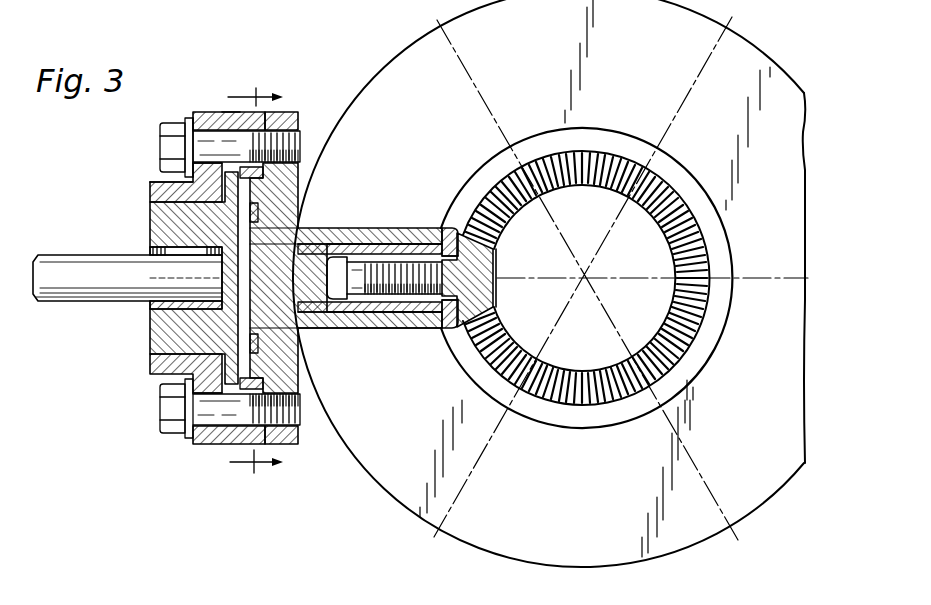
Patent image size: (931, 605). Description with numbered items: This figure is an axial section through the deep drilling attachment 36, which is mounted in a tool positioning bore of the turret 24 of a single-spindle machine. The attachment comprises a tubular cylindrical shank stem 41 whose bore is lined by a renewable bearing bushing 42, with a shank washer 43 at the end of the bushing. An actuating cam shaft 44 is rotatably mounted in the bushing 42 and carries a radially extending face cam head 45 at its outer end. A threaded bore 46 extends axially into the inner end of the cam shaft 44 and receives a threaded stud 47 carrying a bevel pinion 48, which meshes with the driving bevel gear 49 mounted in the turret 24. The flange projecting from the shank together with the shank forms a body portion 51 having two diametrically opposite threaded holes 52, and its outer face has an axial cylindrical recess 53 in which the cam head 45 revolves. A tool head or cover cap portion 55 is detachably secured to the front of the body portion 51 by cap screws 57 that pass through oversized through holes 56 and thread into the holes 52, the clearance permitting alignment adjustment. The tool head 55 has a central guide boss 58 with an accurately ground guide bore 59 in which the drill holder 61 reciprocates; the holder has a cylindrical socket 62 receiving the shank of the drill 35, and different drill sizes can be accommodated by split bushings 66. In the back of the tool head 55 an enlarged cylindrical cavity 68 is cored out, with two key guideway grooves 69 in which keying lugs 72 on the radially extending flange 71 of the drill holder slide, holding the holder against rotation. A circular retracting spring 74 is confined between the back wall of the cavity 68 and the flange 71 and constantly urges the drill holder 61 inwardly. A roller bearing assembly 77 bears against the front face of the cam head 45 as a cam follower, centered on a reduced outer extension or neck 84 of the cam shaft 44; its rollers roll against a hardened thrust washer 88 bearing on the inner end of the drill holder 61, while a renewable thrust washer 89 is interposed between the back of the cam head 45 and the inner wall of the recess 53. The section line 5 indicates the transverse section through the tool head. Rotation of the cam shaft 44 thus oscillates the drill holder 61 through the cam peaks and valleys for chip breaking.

The section line 5- 5 is at (255, 279).
The turret 24 is at (391, 62).
The drill 35 is at (66, 262).
The deep drilling attachment 36 is at (192, 79).
The tubular cylindrical shank stem 41 is at (388, 230).
The renewable bearing bushing 42 is at (410, 313).
The shank washer 43 is at (451, 228).
The actuating cam shaft 44 is at (363, 332).
The face cam head 45 is at (300, 210).
The threaded bore 46 is at (427, 329).
The threaded stud 47 is at (417, 273).
The bevel pinion 48 is at (483, 277).
The driving bevel gear 49 is at (607, 188).
The body portion 51 is at (287, 111).
The threaded holes 52 is at (300, 126).
The axial cylindrical recess 53 is at (297, 342).
The tool head or cover cap portion 55 is at (224, 111).
The through holes 56 is at (200, 111).
The cap screws 57 is at (168, 146).
The central guide boss 58 is at (158, 187).
The guide bore 59 is at (157, 213).
The drill holder 61 is at (160, 227).
The cylindrical socket 62 is at (153, 257).
The split bushings 66 is at (153, 305).
The cylindrical cavity 68 is at (265, 363).
The key guideway grooves 69 is at (263, 170).
The radially extending flange 71 is at (151, 360).
The keying lugs 72 is at (199, 446).
The circular retracting spring 74 is at (192, 187).
The roller bearing assembly 77 is at (262, 193).
The reduced outer extension or neck 84 is at (253, 278).
The hardened thrust washer 88 is at (240, 320).
The renewable thrust washer 89 is at (298, 230).